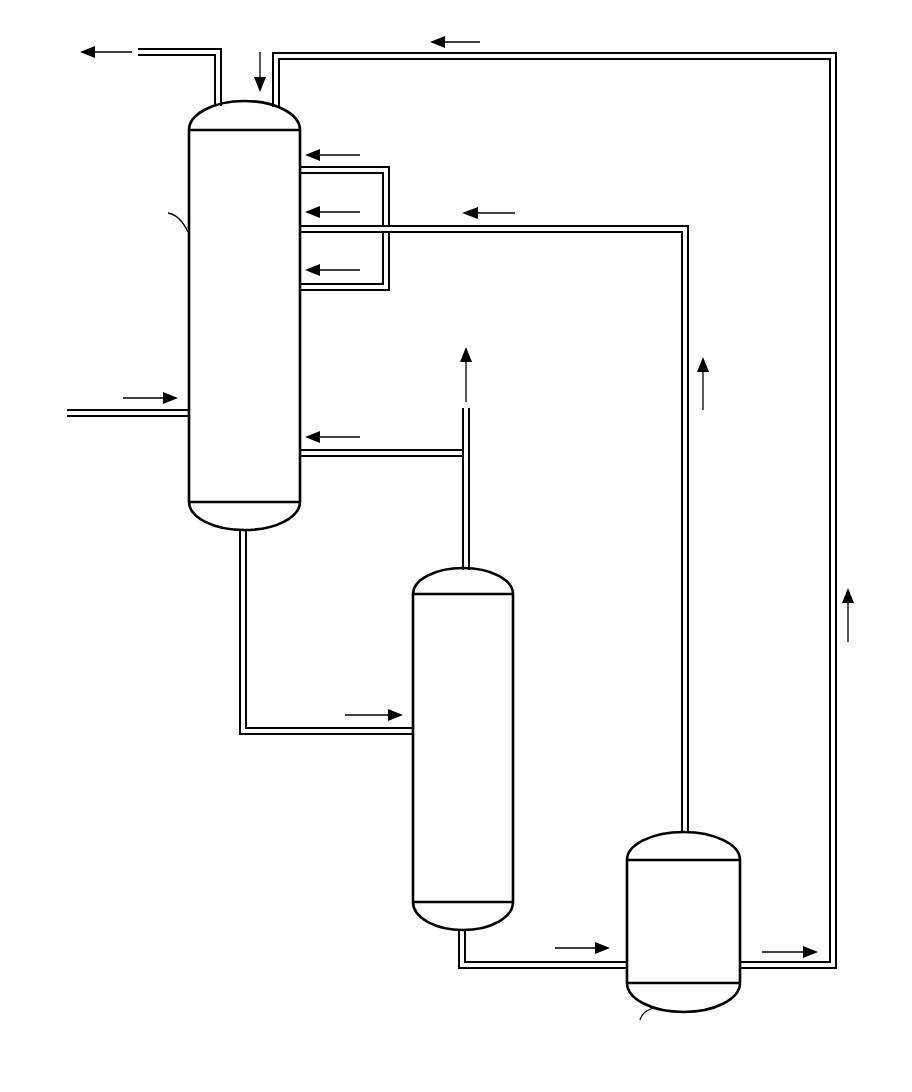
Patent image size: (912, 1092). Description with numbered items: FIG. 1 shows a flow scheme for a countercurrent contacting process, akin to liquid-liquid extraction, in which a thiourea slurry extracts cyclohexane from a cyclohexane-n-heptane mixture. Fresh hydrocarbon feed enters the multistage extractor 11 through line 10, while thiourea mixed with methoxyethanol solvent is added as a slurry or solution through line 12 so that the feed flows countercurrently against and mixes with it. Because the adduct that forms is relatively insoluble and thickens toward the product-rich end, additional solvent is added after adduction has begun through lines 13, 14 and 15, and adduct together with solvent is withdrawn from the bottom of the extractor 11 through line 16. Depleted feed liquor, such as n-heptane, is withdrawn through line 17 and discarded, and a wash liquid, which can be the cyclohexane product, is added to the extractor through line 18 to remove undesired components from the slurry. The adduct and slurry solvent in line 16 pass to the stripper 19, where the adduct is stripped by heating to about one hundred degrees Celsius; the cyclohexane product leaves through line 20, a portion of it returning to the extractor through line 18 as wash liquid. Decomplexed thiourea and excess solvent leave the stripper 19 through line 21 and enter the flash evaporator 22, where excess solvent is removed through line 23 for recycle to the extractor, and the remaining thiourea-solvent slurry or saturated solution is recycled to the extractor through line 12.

The feed line 10 is at (109, 407).
The multistage extractor 11 is at (176, 315).
The thiourea recycle slurry line 12 is at (326, 51).
The additional solvent line 13 is at (375, 163).
The additional solvent line 14 is at (375, 220).
The additional solvent line 15 is at (375, 277).
The adduct withdrawal line 16 is at (250, 625).
The depleted feed liquor line 17 is at (187, 48).
The wash liquid line 18 is at (385, 450).
The stripper 19 is at (405, 749).
The product line 20 is at (469, 512).
The stripper bottoms line 21 is at (533, 962).
The flash evaporator 22 is at (682, 937).
The excess solvent recycle line 23 is at (680, 778).